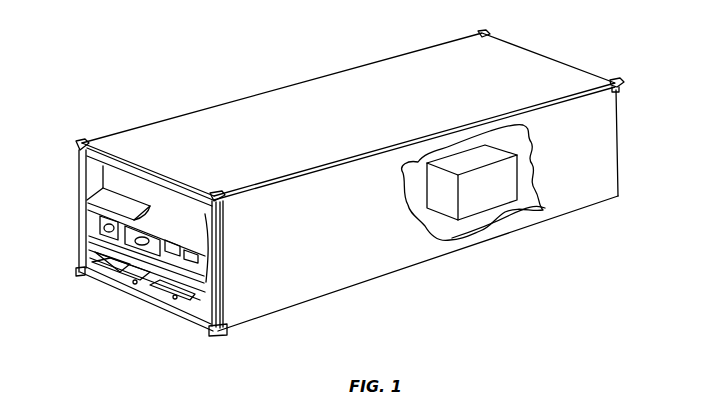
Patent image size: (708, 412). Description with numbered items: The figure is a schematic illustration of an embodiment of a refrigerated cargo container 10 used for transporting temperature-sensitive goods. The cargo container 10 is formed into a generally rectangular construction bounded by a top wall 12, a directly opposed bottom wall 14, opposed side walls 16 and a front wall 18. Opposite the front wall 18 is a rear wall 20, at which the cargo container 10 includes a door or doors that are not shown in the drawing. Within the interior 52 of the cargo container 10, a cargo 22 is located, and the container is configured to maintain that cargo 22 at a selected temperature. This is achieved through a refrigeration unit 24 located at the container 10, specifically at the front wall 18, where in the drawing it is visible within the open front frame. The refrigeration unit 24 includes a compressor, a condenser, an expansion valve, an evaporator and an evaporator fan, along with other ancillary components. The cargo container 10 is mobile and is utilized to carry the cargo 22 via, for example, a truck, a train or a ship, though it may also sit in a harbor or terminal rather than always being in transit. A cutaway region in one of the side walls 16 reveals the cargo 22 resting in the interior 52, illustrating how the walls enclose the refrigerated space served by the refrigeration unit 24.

The refrigerated cargo container 10 is at (158, 47).
The top wall 12 is at (295, 93).
The bottom wall 14 is at (373, 278).
The side walls 16 is at (428, 247).
The front wall 18 is at (80, 153).
The rear wall 20 is at (608, 143).
The cargo 22 is at (472, 182).
The refrigeration unit 24 is at (126, 290).
The interior 52 is at (532, 207).